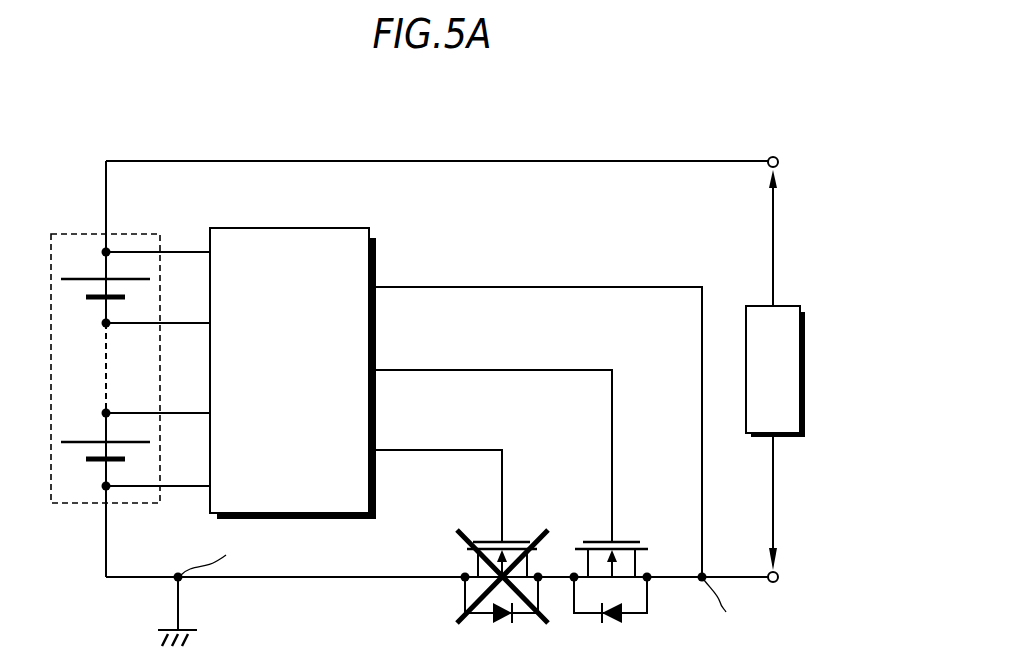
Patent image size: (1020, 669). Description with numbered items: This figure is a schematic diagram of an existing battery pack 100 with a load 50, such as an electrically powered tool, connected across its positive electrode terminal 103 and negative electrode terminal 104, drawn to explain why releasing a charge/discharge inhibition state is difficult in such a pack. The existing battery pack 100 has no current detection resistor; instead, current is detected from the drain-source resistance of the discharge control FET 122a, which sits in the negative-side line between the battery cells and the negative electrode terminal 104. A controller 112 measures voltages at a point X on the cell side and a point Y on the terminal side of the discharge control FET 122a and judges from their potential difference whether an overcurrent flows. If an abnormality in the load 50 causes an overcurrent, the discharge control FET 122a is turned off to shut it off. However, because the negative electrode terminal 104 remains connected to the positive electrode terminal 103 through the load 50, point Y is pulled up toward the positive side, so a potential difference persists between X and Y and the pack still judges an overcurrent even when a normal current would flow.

The existing battery pack 100 is at (718, 96).
The positive electrode terminal 103 is at (778, 158).
The negative electrode terminal 104 is at (779, 573).
The load 50 is at (782, 305).
The controller 112 is at (335, 228).
The discharge control FET 122a is at (490, 540).